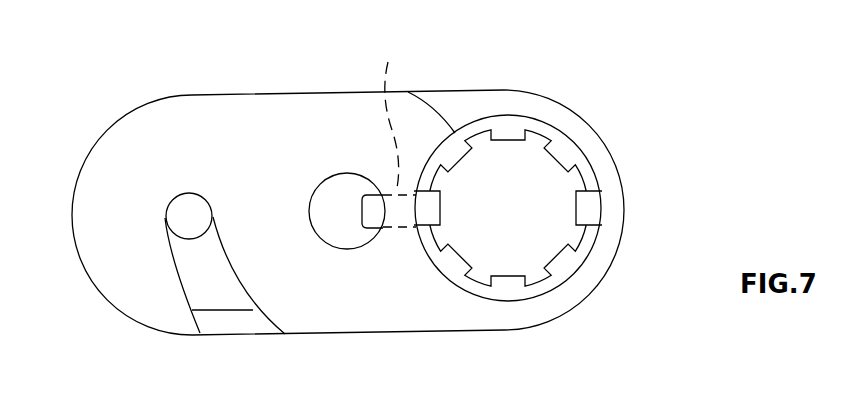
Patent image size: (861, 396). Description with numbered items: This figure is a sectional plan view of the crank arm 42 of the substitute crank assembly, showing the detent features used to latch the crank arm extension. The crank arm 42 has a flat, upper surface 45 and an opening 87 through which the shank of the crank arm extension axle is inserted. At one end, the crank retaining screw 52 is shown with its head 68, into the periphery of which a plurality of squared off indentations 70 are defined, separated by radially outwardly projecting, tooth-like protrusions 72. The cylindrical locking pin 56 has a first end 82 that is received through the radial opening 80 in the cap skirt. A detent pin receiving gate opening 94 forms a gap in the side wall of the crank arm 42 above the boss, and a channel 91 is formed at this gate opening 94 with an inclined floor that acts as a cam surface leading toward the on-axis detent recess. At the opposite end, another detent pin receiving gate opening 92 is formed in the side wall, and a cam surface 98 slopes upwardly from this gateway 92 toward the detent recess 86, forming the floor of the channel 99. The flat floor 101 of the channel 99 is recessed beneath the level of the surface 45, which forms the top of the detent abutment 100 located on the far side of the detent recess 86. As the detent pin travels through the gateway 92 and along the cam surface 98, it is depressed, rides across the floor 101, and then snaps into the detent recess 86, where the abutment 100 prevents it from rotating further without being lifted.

The crank arm 42 is at (123, 97).
The flat upper surface 45 is at (353, 317).
The crank retaining screw 52 is at (503, 256).
The cylindrical locking pin 56 is at (400, 130).
The head 68 is at (513, 175).
The squared off indentations 70 is at (565, 148).
The radially outwardly projecting protrusions 72 is at (577, 177).
The radial opening 80 is at (333, 7).
The first end of the locking pin 82 is at (428, 215).
The detent recess 86 is at (187, 227).
The opening 87 is at (325, 200).
The channel 91 is at (505, 115).
The detent pin receiving gate opening 92 is at (247, 334).
The detent pin receiving gate opening 94 is at (453, 92).
The cam surface 98 is at (213, 327).
The channel 99 is at (205, 273).
The detent abutment 100 is at (188, 196).
The floor of the channel 101 is at (200, 295).